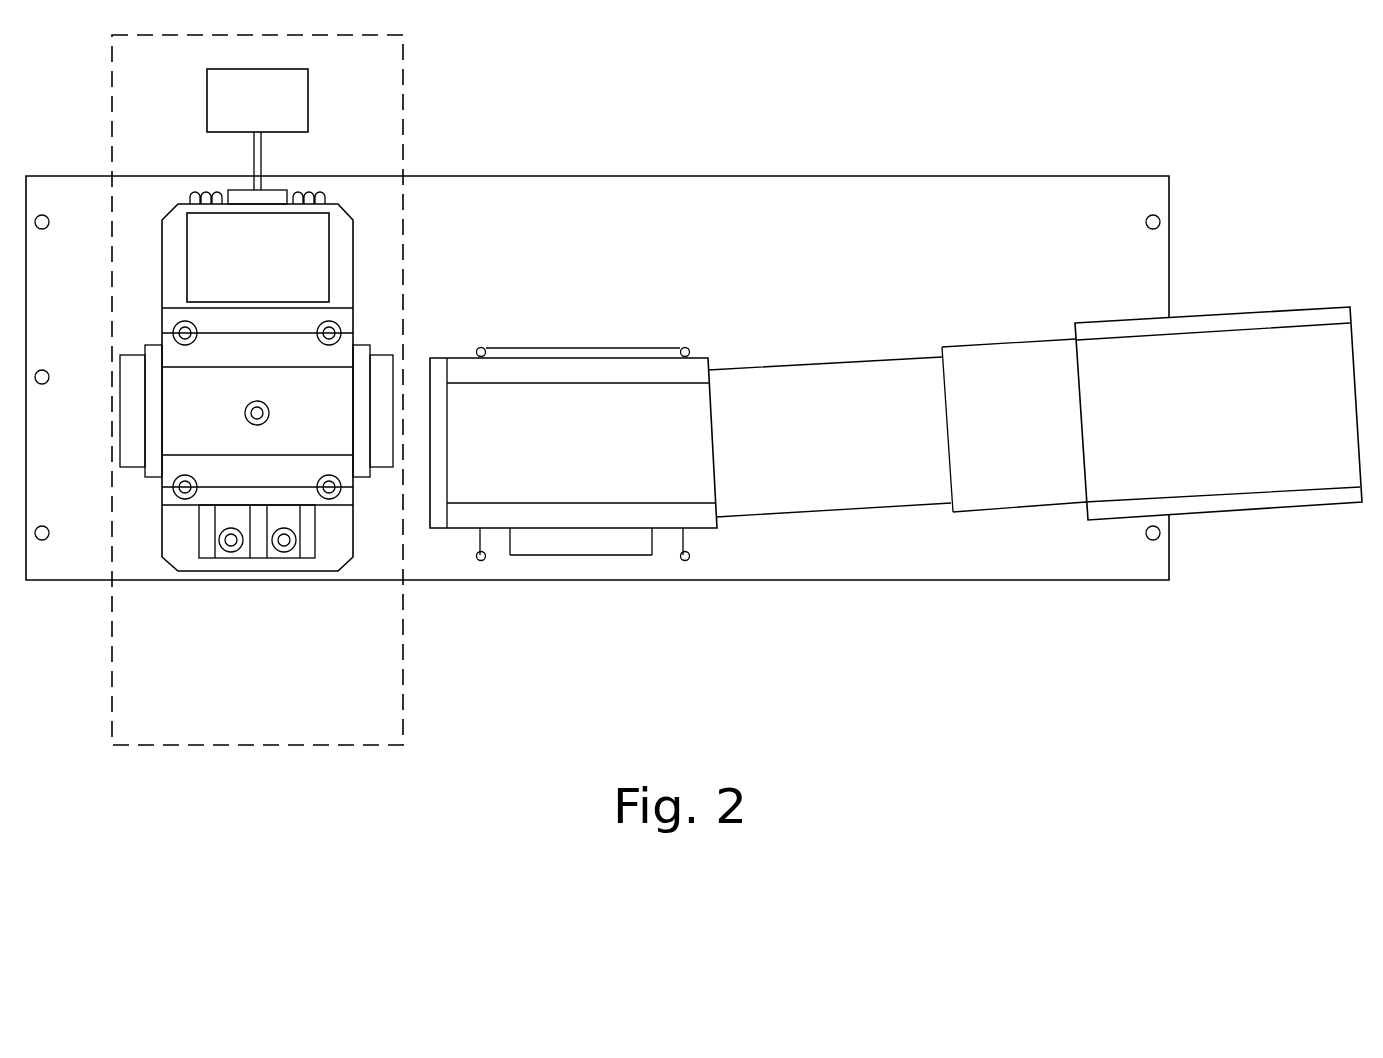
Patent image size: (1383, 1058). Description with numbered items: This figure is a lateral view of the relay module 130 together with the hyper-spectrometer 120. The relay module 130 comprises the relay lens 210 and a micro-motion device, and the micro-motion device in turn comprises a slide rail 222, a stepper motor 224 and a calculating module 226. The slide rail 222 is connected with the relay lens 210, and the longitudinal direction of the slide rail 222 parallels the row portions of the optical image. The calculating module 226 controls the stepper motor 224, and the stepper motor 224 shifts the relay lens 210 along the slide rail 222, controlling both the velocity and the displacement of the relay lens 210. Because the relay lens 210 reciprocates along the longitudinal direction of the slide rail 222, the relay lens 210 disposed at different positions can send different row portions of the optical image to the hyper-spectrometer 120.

The relay module 130 is at (403, 103).
The calculating module 226 is at (278, 113).
The stepper motor 224 is at (278, 270).
The relay lens 210 is at (178, 413).
The slide rail 222 is at (256, 558).
The hyper-spectrometer 120 is at (584, 347).